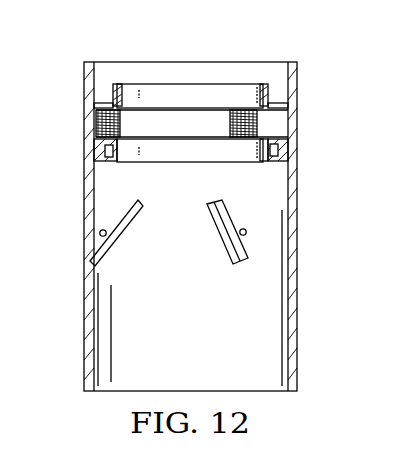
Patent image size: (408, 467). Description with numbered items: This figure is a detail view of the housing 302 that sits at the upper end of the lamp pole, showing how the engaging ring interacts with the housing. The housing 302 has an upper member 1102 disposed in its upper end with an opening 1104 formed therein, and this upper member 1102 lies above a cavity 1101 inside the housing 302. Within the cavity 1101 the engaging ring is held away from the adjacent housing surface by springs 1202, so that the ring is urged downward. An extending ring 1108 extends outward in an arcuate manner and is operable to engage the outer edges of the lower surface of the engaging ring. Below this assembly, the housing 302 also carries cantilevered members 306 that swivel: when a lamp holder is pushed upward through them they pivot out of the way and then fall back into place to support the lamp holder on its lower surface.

The housing 302 is at (297, 321).
The cantilevered members 306 is at (121, 243).
The cavity 1101 is at (216, 117).
The upper member 1102 is at (100, 95).
The opening 1104 is at (185, 161).
The extending ring 1108 is at (300, 163).
The springs 1202 is at (123, 128).